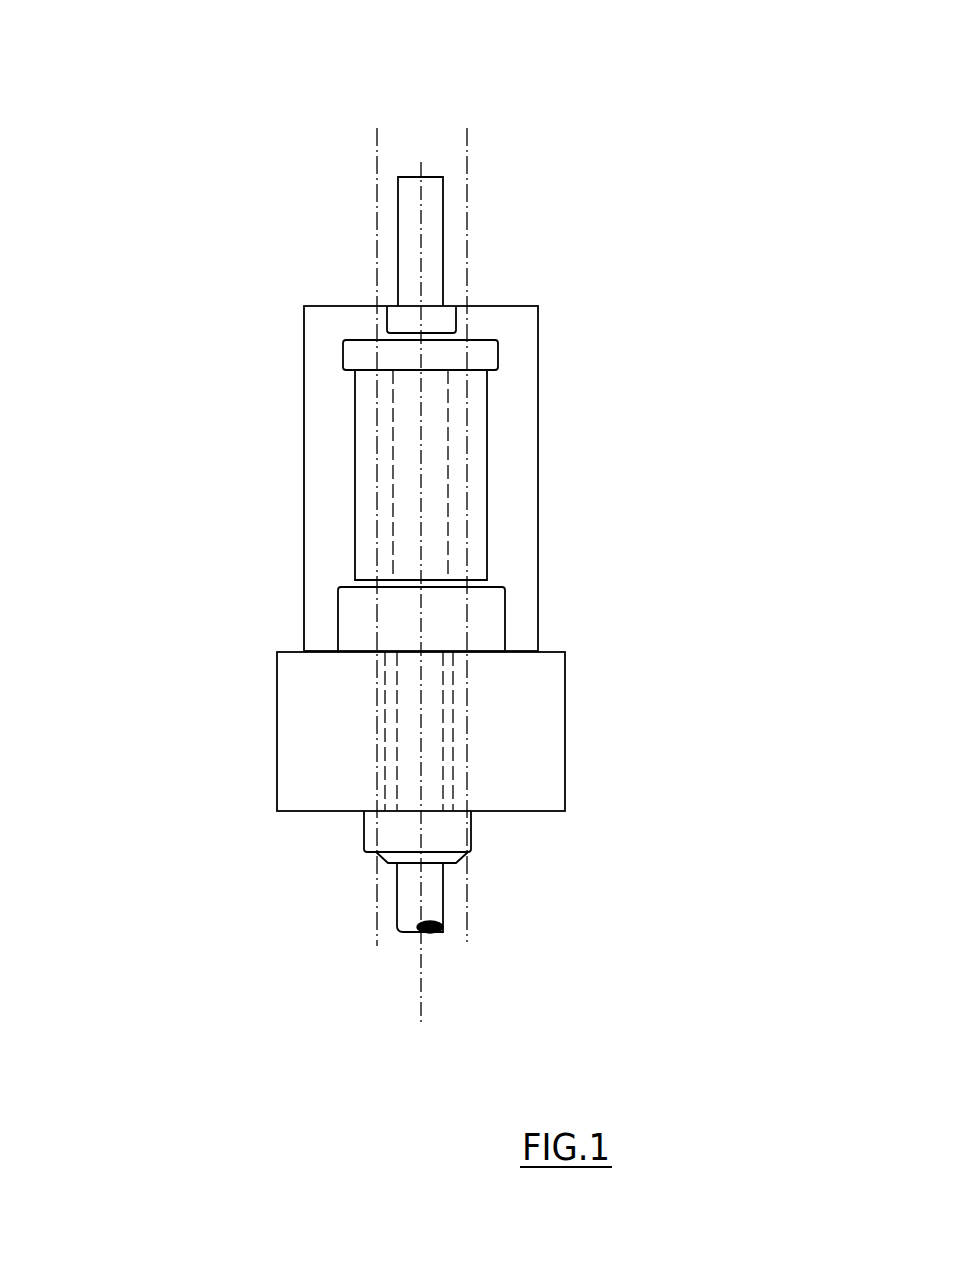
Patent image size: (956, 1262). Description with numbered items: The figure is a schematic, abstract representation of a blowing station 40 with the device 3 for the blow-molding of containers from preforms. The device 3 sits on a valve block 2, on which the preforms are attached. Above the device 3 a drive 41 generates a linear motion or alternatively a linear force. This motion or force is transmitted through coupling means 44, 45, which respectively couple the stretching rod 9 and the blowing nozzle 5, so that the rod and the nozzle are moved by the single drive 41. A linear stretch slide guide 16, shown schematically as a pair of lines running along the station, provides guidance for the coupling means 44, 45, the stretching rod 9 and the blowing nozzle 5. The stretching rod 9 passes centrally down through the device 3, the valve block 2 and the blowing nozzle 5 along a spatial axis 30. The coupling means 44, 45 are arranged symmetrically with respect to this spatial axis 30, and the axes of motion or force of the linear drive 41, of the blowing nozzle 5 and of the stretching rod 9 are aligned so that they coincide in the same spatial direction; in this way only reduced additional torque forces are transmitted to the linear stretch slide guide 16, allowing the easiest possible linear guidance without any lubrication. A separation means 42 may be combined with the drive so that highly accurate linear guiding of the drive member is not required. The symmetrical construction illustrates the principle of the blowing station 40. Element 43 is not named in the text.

The valve block 2 is at (510, 680).
The device for blow-molding 3 is at (516, 340).
The blowing nozzle 5 is at (453, 832).
The stretching rod 9 is at (439, 413).
The linear stretch slide guide 16 is at (380, 142).
The spatial axis 30 is at (417, 990).
The blowing station 40 is at (222, 657).
The drive 41 is at (435, 217).
The separation means 42 is at (448, 322).
The flange 43 is at (357, 354).
The coupling means 44 is at (387, 532).
The coupling means 45 is at (355, 625).